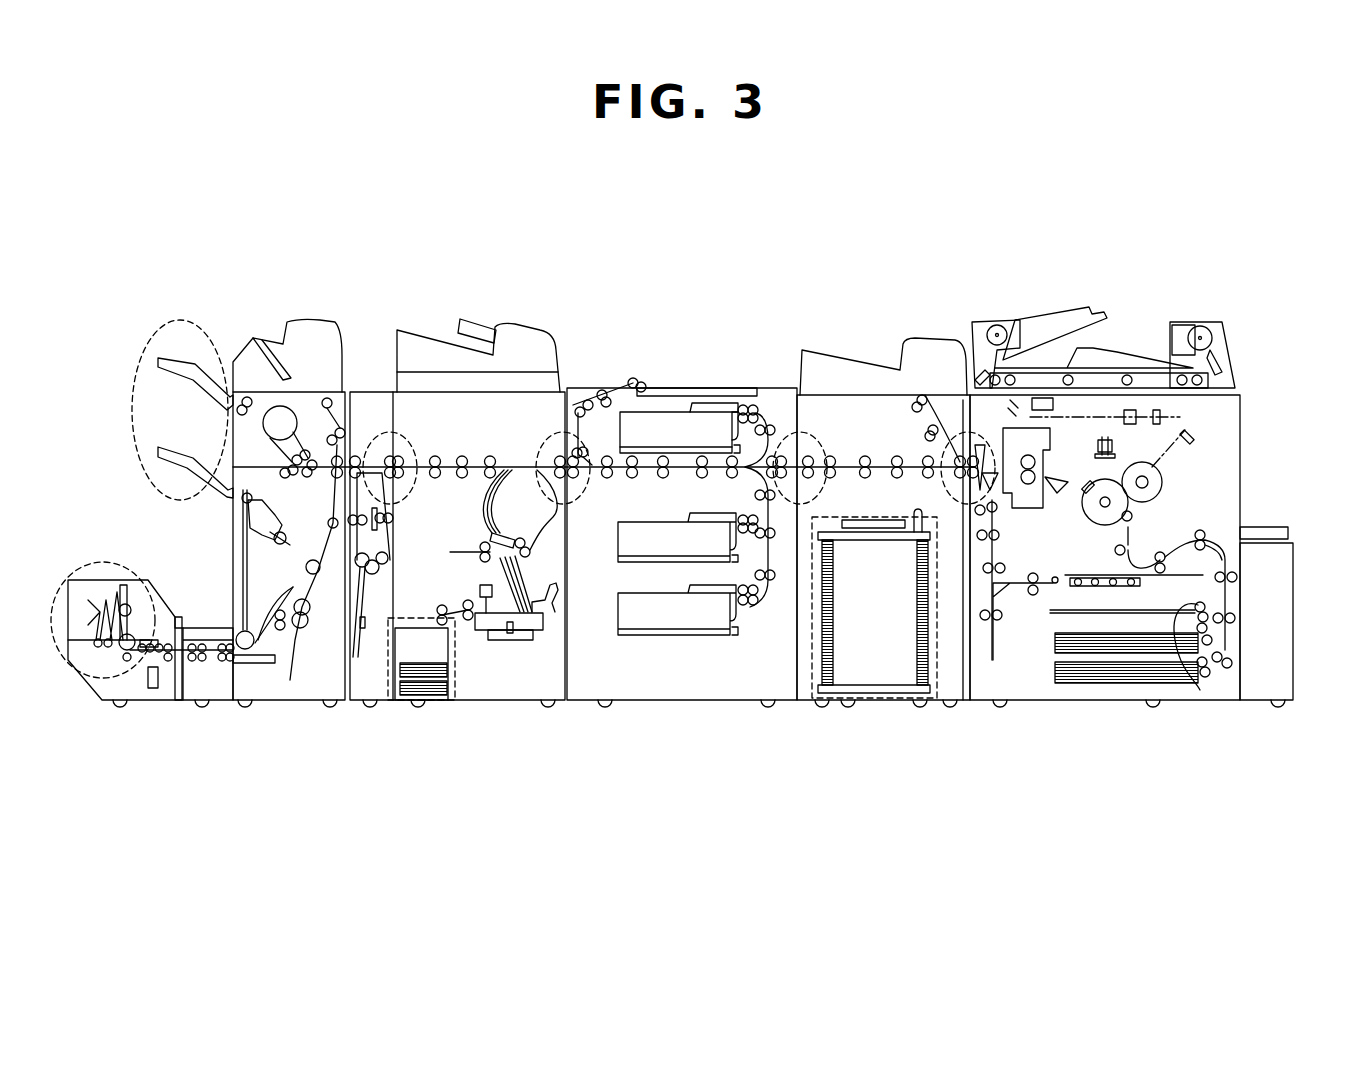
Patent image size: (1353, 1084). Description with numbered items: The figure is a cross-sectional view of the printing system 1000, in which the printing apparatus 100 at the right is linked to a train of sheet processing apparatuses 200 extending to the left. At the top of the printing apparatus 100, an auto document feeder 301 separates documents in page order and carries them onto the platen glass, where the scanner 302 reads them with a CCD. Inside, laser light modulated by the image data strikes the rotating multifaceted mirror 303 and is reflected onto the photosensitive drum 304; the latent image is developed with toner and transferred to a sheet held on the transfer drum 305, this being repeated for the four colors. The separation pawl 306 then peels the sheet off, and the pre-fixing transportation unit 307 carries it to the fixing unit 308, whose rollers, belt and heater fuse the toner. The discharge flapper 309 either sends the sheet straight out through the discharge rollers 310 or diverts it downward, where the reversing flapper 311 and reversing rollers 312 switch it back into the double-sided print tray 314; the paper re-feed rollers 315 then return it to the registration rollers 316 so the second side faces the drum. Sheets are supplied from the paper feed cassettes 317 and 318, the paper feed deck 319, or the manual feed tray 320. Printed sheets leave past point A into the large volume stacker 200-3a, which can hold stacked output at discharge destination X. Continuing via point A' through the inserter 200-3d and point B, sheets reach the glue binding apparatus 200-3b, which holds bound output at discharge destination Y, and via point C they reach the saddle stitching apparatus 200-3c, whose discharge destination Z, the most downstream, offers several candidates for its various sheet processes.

The printing system 1000 is at (82, 228).
The sheet processing apparatuses 200 is at (972, 807).
The saddle stitching apparatus 200-3c is at (68, 734).
The glue binding apparatus 200-3b is at (397, 734).
The inserter 200-3d is at (568, 734).
The large volume stacker 200-3a is at (965, 734).
The printing apparatus 100 is at (1293, 745).
The auto document feeder 301 is at (1048, 318).
The scanner 302 is at (1055, 440).
The rotating multifaceted mirror 303 is at (1057, 400).
The photosensitive drum 304 is at (1050, 440).
The transfer drum 305 is at (1130, 510).
The separation pawl 306 is at (1165, 485).
The pre-fixing transportation unit 307 is at (1192, 436).
The fixing unit 308 is at (1125, 395).
The discharge flapper 309 is at (975, 480).
The discharge rollers 310 is at (945, 467).
The reversing flapper 311 is at (1005, 590).
The reversing rollers 312 is at (945, 470).
The double-sided print tray 314 is at (1150, 610).
The paper re-feed rollers 315 is at (1222, 650).
The registration rollers 316 is at (1222, 553).
The paper feed cassette 317 is at (1055, 640).
The paper feed cassette 318 is at (1100, 684).
The paper feed deck 319 is at (1293, 685).
The manual feed tray 320 is at (1270, 527).
The discharge destination Z is at (80, 577).
The point C is at (382, 430).
The discharge destination Y is at (422, 617).
The point B is at (557, 432).
The point A' is at (786, 399).
The discharge destination X is at (883, 513).
The point A is at (967, 397).